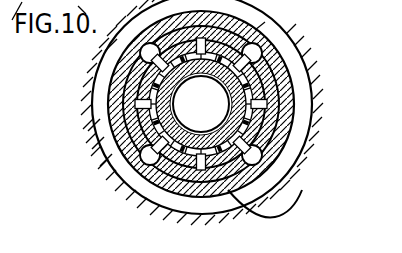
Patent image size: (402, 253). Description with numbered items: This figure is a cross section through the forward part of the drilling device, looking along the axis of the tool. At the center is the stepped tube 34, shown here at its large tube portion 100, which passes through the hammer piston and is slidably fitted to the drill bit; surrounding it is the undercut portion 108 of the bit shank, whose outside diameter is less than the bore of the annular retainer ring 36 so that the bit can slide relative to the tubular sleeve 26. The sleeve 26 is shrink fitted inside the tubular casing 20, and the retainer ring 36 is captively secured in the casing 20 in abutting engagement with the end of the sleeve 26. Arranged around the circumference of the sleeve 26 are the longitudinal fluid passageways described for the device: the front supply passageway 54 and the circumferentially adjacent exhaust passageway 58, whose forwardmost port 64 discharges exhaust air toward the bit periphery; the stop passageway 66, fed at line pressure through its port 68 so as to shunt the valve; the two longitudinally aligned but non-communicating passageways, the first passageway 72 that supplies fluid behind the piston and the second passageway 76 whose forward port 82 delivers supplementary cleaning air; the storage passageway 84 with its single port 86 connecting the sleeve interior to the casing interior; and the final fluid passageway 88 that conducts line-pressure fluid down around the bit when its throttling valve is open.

The tubular casing 20 is at (282, 54).
The tubular sleeve 26 is at (125, 204).
The stepped tube 34 is at (222, 124).
The annular retainer ring 36 is at (159, 201).
The front supply passageway 54 is at (262, 154).
The exhaust passageway 58 is at (268, 203).
The forwardmost port 64 is at (272, 216).
The stop passageway 66 is at (110, 181).
The port 68 is at (11, 10).
The first passageway 72 is at (76, 7).
The second passageway 76 is at (130, 97).
The forward port 82 is at (93, 142).
The longitudinally extending passageway 84 is at (101, 45).
The port 86 is at (262, 62).
The fluid passageway 88 is at (268, 20).
The large tube portion 100 is at (268, 190).
The undercut portion 108 is at (258, 107).